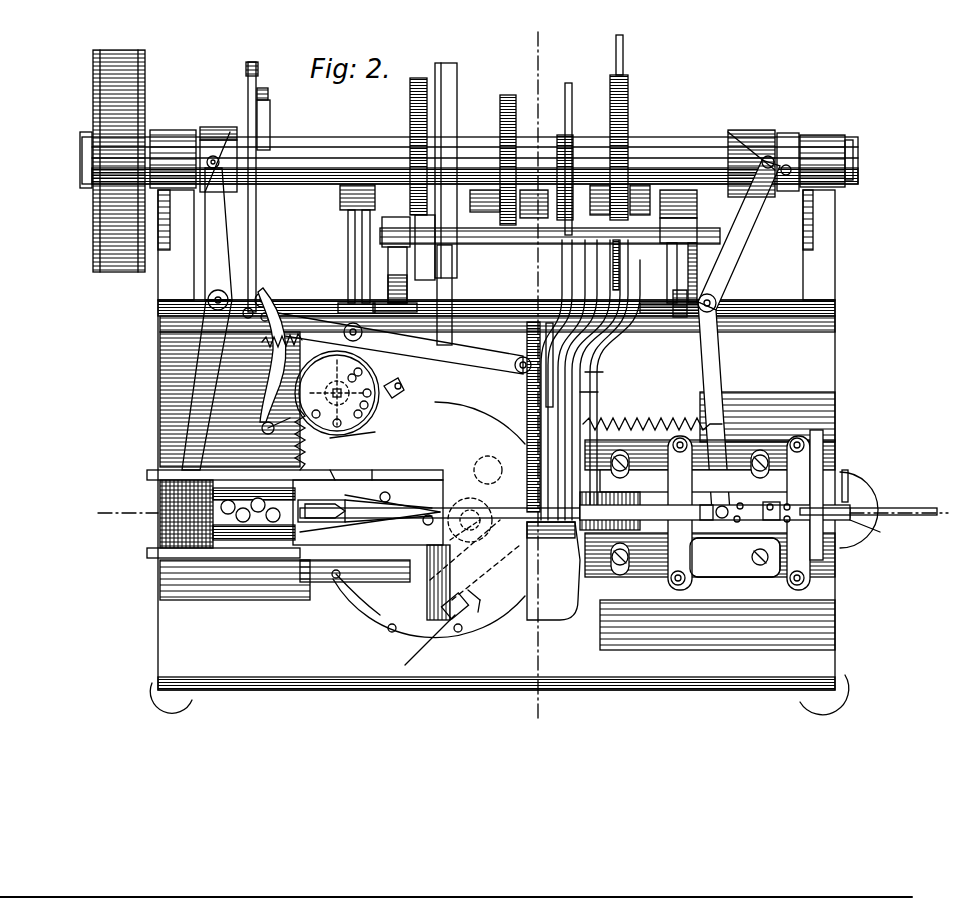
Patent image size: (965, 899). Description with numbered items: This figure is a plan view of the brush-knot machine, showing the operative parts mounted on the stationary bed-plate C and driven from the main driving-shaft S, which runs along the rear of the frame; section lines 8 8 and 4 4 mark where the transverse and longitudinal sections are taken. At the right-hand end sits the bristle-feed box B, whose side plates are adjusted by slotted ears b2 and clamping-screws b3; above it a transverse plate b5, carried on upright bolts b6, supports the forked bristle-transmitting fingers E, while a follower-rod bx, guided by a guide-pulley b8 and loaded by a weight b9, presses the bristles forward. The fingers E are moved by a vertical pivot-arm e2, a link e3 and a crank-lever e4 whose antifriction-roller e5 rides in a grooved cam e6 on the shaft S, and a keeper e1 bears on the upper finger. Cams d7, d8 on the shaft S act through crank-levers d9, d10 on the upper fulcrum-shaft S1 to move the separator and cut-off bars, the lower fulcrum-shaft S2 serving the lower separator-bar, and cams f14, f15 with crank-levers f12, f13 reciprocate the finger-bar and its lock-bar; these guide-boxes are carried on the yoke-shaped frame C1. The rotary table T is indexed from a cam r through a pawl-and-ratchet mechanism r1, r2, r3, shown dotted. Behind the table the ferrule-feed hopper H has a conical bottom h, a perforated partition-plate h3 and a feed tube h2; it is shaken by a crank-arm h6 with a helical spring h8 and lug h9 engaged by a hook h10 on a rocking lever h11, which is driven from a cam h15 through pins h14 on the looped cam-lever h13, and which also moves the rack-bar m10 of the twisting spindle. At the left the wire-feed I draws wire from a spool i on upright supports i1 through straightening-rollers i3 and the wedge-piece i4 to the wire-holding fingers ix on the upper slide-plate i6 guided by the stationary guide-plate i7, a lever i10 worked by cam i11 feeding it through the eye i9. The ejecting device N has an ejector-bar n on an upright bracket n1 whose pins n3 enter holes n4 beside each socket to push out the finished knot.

The bed-plate C is at (178, 388).
The yoke-shaped frame C1 is at (572, 584).
The main driving-shaft S is at (332, 160).
The upper fulcrum-shaft S1 is at (382, 238).
The lower fulcrum-shaft S2 is at (342, 205).
The cam i11 is at (215, 150).
The lever i10 is at (215, 220).
The spring-actuated hook h10 is at (250, 368).
The cam-lever h13 is at (248, 82).
The pins h14 is at (266, 92).
The cam h15 is at (270, 120).
The rocking lever h11 is at (300, 322).
The crank-arm h6 is at (262, 410).
The ferrule-feed hopper H is at (312, 362).
The partition-plate h3 is at (346, 378).
The ferrule-feed tube h2 is at (401, 385).
The lug h9 is at (262, 432).
The helical spring h8 is at (296, 452).
The conical bottom h is at (356, 438).
The cam r is at (410, 120).
The pawl-and-ratchet mechanism r1 is at (446, 113).
The pawl-and-ratchet mechanism r2 is at (465, 528).
The pawl-and-ratchet mechanism r3 is at (460, 476).
The cam f15 is at (556, 150).
The cam f14 is at (590, 150).
The crank-lever f13 is at (603, 371).
The crank-lever f12 is at (598, 391).
The cam d7 is at (610, 118).
The cam d8 is at (630, 126).
The crank-lever d9 is at (600, 352).
The crank-lever d10 is at (640, 340).
The rack-bar m10 is at (525, 388).
The rotary table T is at (429, 520).
The upright supports i1 is at (160, 472).
The wire-feed I is at (211, 514).
The spool i is at (160, 530).
The straightening-rollers i3 is at (243, 524).
The wedge-piece i4 is at (368, 512).
The wire-holding fingers ix is at (370, 514).
The stationary guide-plate i7 is at (362, 556).
The upper slide-plate i6 is at (374, 464).
The eye i9 is at (520, 520).
The brush-knot-ejecting device N is at (454, 596).
The pins n3 is at (452, 656).
The ejector-bar n is at (470, 587).
The upright bracket n1 is at (488, 603).
The holes n4 is at (340, 600).
The crank-lever e4 is at (728, 262).
The grooved cam e6 is at (758, 140).
The antifriction-roller e5 is at (782, 190).
The pivot-arm e2 is at (680, 504).
The link e3 is at (720, 522).
The keeper e1 is at (760, 530).
The bristle-feed box B is at (710, 524).
The bristle-transmitting fingers E is at (618, 495).
The slotted ears b2 is at (756, 592).
The clamping-screws b3 is at (722, 594).
The transverse plate b5 is at (795, 490).
The upright bolts b6 is at (806, 440).
The weight b9 is at (860, 490).
The follower-rod bx is at (905, 510).
The guide-pulley b8 is at (881, 525).
The section line 8 8 is at (535, 380).
The section line 4 4 is at (520, 514).